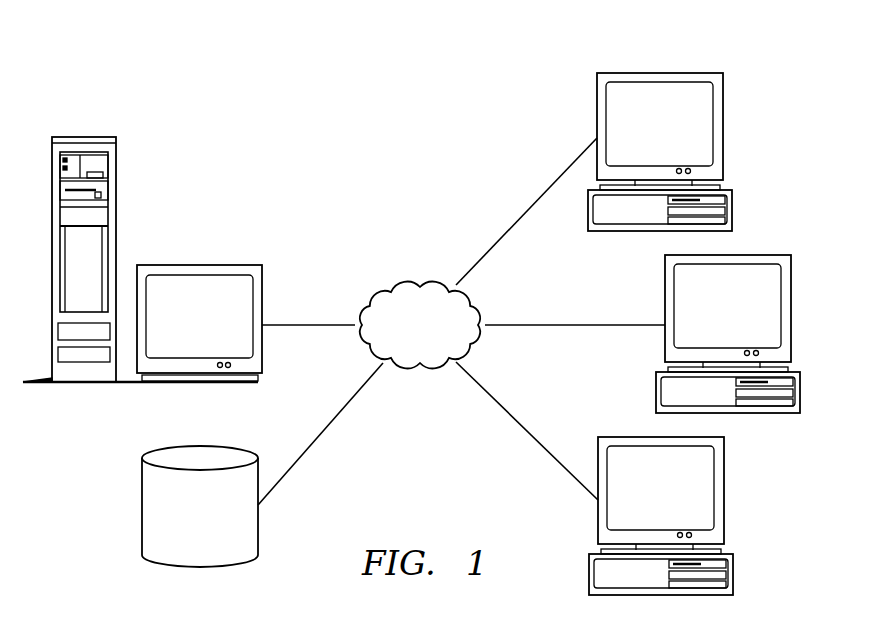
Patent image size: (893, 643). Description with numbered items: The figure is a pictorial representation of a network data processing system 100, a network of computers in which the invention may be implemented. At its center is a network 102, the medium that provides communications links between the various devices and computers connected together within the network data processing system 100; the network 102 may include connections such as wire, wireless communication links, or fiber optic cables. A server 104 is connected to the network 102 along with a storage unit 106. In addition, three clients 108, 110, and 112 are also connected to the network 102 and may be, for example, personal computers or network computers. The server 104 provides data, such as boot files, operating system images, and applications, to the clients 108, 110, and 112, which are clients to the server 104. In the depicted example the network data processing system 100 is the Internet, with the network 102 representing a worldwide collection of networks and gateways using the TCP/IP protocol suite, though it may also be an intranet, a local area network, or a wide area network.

The network data processing system 100 is at (301, 140).
The network 102 is at (393, 280).
The server 104 is at (184, 326).
The storage unit 106 is at (141, 507).
The client 108 is at (644, 136).
The client 110 is at (712, 318).
The client 112 is at (646, 500).